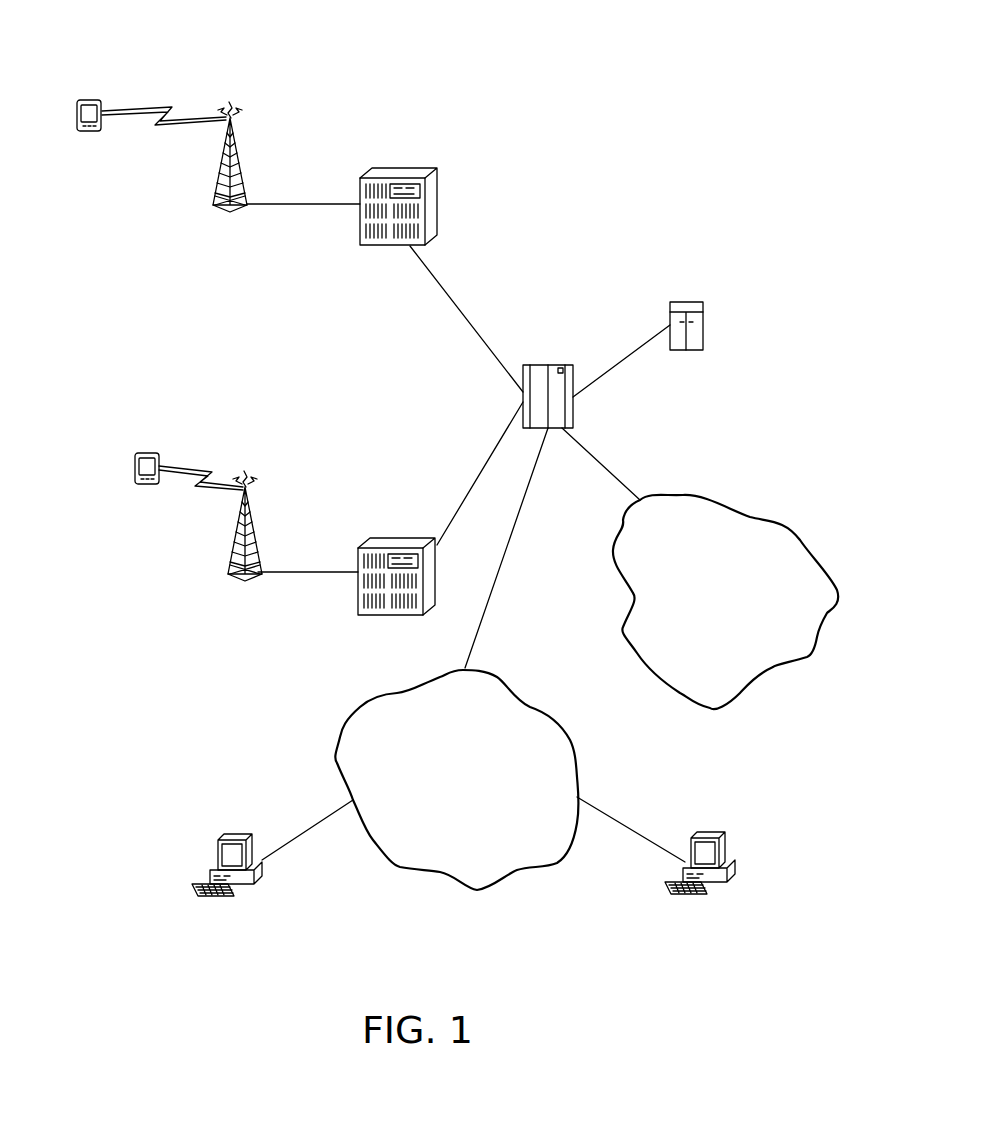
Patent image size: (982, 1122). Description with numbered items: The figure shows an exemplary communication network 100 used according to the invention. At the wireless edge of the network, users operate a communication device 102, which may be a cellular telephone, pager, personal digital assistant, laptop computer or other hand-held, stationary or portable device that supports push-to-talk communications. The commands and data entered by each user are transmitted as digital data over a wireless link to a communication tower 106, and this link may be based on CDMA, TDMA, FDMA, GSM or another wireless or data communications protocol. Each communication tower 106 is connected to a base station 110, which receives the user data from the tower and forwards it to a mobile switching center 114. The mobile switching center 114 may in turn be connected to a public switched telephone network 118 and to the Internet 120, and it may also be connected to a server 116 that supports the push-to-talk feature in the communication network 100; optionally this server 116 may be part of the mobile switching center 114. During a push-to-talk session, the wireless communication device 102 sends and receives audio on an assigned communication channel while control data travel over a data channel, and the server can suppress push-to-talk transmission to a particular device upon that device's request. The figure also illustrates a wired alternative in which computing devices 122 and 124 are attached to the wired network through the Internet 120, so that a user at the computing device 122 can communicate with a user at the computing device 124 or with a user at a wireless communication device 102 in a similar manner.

The communication network 100 is at (506, 91).
The communication device 102 is at (102, 111).
The communication tower 106 is at (237, 145).
The base station (BS) 110 is at (437, 200).
The mobile switching center (MSC) 114 is at (563, 365).
The server 116 is at (700, 302).
The public switched telephone network (PSTN) 118 is at (722, 508).
The Internet 120 is at (535, 708).
The computing device 122 is at (230, 898).
The computing device 124 is at (705, 897).